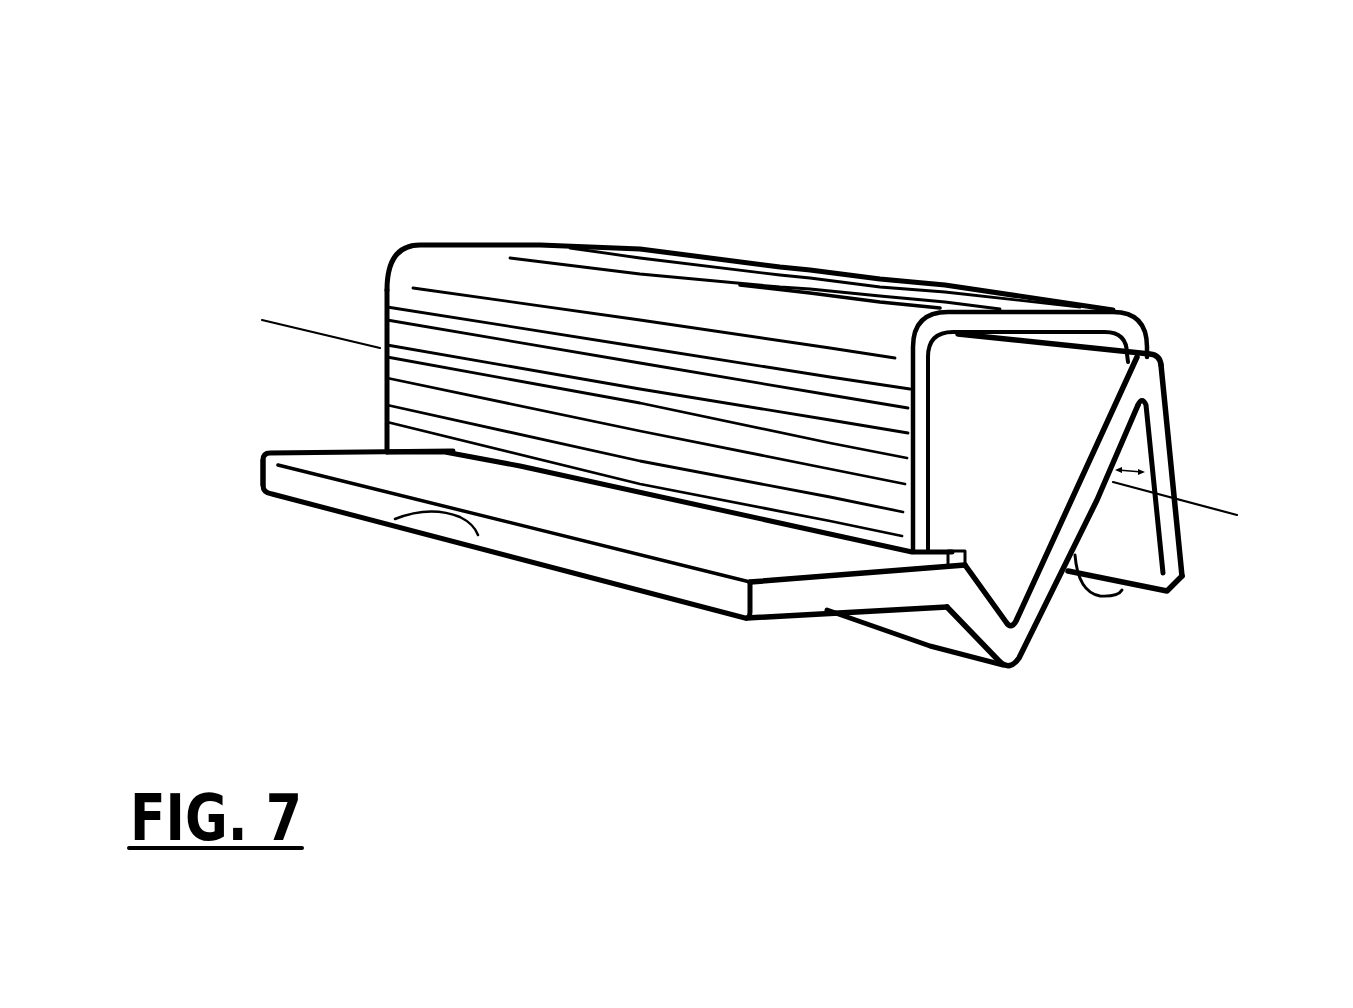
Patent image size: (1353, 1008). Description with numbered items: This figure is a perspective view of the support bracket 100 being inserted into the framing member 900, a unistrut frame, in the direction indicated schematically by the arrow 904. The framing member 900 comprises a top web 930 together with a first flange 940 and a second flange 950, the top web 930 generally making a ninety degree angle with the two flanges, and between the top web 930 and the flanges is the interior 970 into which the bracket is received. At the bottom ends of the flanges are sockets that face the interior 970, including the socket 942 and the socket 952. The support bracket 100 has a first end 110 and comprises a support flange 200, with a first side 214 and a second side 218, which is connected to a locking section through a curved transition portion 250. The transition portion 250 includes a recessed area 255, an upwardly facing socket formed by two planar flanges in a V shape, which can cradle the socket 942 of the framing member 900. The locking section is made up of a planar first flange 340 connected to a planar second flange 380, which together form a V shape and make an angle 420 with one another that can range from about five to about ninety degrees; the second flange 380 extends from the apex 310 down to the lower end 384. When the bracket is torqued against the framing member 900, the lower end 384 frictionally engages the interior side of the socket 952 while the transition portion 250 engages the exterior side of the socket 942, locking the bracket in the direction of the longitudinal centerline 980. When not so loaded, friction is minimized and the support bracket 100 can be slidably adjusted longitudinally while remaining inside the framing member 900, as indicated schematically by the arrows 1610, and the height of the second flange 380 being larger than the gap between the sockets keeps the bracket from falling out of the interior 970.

The framing member 900 is at (568, 150).
The top web 930 is at (878, 300).
The first flange 940 is at (478, 350).
The apex 310 is at (1070, 332).
The first flange 340 is at (958, 433).
The socket 942 is at (952, 553).
The second flange 950 is at (1150, 352).
The second flange 380 is at (1162, 460).
The lower end 384 is at (1180, 587).
The socket 952 is at (1093, 592).
The support flange 200 is at (533, 510).
The transition portion 250 is at (1013, 667).
The second side 218 is at (853, 593).
The recessed area 255 is at (1011, 566).
The angle 420 is at (1126, 464).
The support bracket 100 is at (460, 585).
The first end 110 is at (397, 518).
The first side 214 is at (290, 453).
The longitudinal centerline 980 is at (262, 320).
The interior 970 is at (342, 384).
The arrow 904 is at (828, 716).
The arrows 1610 is at (800, 189).